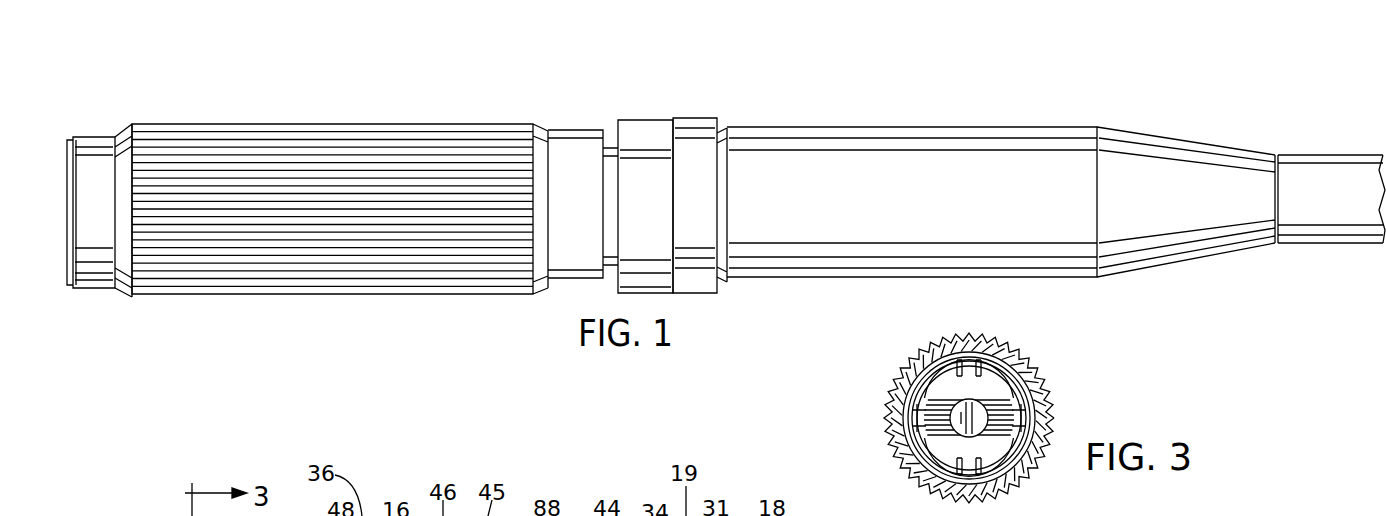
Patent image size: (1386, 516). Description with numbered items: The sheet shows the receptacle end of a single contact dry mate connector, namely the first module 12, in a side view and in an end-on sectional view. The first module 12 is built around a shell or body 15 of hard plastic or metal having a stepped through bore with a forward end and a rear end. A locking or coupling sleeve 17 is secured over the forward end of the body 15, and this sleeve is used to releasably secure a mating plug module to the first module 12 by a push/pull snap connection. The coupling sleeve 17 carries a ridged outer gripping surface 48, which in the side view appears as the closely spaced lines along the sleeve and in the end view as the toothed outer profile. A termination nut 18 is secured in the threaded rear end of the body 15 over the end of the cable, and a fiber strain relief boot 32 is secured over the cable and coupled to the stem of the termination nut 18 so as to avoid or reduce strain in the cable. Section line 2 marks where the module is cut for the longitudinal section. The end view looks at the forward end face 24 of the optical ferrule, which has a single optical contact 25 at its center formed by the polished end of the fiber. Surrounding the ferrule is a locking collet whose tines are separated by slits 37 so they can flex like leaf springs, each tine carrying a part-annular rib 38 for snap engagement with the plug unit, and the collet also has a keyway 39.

In FIG. 1, the section line 2- 2 is at (98, 213).
In FIG. 1, the first module 12 is at (846, 115).
In FIG. 1, the body 15 is at (632, 118).
In FIG. 3, the body 15 is at (987, 447).
In FIG. 1, the coupling sleeve 17 is at (414, 112).
In FIG. 3, the coupling sleeve 17 is at (1030, 360).
In FIG. 1, the termination nut 18 is at (707, 121).
In FIG. 3, the forward end face 24 is at (965, 400).
In FIG. 3, the optical contact 25 is at (969, 418).
In FIG. 1, the fiber strain relief boot 32 is at (1045, 140).
In FIG. 3, the slits 37 is at (962, 463).
In FIG. 3, the part-annular rib 38 is at (920, 388).
In FIG. 3, the keyway 39 is at (968, 362).
In FIG. 1, the ridged outer gripping surface 48 is at (357, 129).
In FIG. 3, the ridged outer gripping surface 48 is at (920, 482).